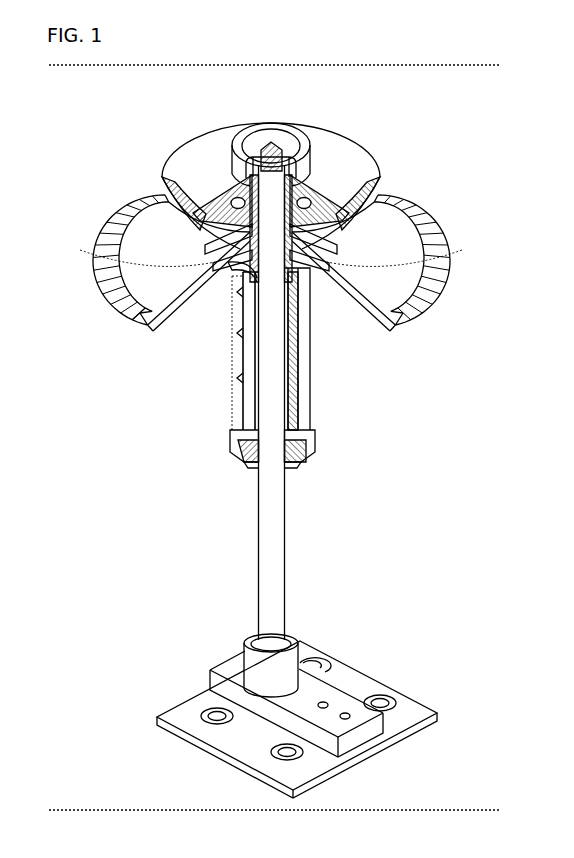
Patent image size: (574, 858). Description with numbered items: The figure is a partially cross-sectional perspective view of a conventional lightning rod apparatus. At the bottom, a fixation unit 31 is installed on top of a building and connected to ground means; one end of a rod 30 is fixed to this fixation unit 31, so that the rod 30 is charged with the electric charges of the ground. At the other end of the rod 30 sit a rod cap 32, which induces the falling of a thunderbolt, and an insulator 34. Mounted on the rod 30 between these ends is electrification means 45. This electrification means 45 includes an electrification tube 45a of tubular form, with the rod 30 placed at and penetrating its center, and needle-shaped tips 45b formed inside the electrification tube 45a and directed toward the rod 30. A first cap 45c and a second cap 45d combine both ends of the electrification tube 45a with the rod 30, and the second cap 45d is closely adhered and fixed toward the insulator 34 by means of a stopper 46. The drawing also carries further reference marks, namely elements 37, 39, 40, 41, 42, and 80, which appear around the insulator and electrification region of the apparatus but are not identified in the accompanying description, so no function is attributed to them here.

The rod 30 is at (283, 513).
The fixation unit 31 is at (357, 673).
The rod cap 32 is at (283, 129).
The insulator 34 is at (343, 153).
The right blade 37 is at (440, 258).
The right strut 39 is at (326, 270).
The left strut 40 is at (312, 306).
The left blade 41 is at (110, 258).
The blade rib 42 is at (148, 318).
The electrification means 45 is at (336, 382).
The electrification tube 45a is at (240, 398).
The needle-shaped tips 45b is at (243, 378).
The first cap 45c is at (242, 338).
The second cap 45d is at (236, 460).
The stopper 46 is at (262, 468).
The link 80 is at (228, 266).